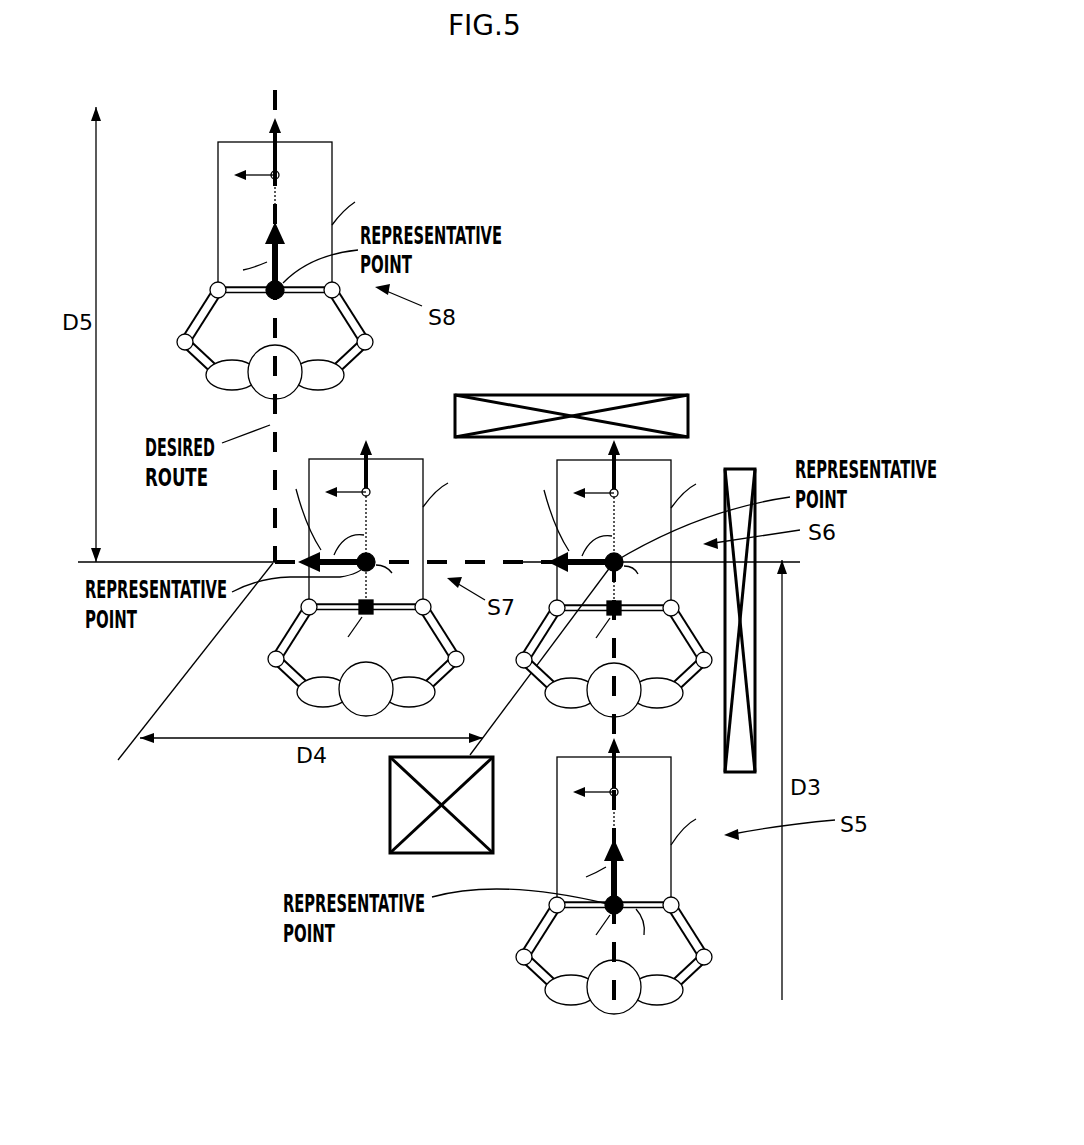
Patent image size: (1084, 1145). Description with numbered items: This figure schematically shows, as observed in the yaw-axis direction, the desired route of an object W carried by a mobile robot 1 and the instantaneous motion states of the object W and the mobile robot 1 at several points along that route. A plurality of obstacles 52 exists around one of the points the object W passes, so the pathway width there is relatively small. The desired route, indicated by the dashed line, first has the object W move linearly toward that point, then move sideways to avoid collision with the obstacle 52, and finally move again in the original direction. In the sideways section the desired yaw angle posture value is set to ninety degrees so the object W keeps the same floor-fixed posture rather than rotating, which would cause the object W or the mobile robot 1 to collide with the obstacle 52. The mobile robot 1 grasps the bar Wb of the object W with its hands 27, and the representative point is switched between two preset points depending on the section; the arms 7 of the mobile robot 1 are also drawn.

The mobile robot 1 is at (460, 586).
The arm 7 is at (619, 972).
The hands 27 is at (610, 894).
The obstacles 52 is at (593, 395).